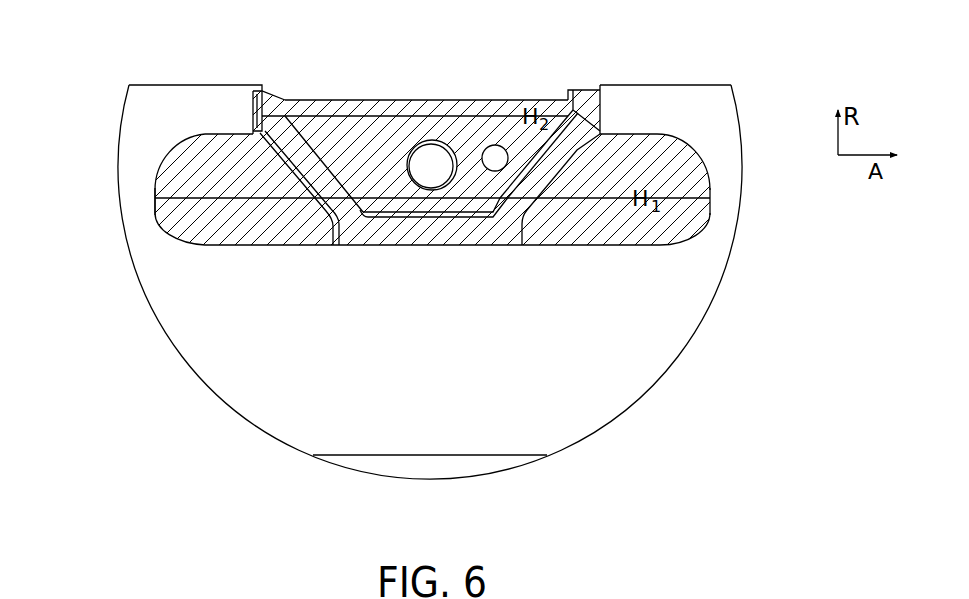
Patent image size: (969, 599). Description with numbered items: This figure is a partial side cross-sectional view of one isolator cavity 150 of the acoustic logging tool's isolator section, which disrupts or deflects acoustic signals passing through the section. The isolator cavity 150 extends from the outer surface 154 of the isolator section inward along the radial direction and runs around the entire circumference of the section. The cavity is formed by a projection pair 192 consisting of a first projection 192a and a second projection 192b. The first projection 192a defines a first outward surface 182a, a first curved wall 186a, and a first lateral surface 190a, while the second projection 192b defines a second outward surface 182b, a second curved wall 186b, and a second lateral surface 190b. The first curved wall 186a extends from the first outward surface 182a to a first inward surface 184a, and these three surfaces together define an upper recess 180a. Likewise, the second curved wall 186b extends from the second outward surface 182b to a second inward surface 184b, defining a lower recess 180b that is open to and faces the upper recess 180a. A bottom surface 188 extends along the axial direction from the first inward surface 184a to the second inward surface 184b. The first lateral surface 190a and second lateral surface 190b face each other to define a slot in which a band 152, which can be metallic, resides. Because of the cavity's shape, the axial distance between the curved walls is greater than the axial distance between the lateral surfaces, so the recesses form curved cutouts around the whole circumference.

The isolator cavity 150 is at (510, 95).
The band 152 is at (383, 96).
The outer surface 154 is at (183, 82).
The upper recess 180a is at (237, 150).
The lower recess 180b is at (636, 146).
The first outward surface 182a is at (207, 131).
The second outward surface 182b is at (661, 130).
The first inward surface 184a is at (208, 249).
The second inward surface 184b is at (618, 249).
The first curved wall 186a is at (152, 199).
The second curved wall 186b is at (713, 202).
The bottom surface 188 is at (423, 249).
The first lateral surface 190a is at (267, 104).
The second lateral surface 190b is at (596, 106).
The projection pair 192 is at (655, 598).
The first projection 192a is at (190, 591).
The second projection 192b is at (795, 592).